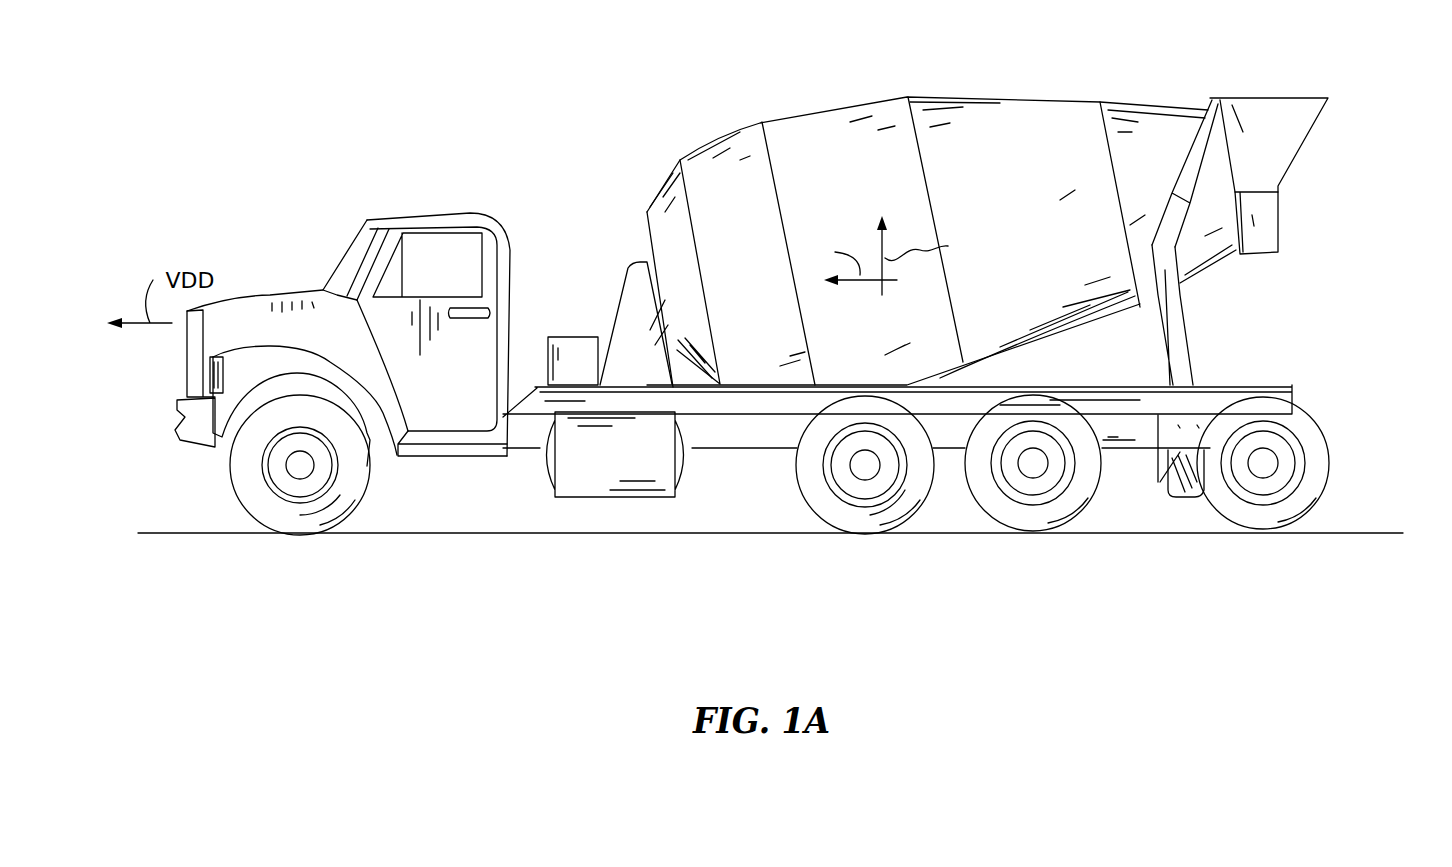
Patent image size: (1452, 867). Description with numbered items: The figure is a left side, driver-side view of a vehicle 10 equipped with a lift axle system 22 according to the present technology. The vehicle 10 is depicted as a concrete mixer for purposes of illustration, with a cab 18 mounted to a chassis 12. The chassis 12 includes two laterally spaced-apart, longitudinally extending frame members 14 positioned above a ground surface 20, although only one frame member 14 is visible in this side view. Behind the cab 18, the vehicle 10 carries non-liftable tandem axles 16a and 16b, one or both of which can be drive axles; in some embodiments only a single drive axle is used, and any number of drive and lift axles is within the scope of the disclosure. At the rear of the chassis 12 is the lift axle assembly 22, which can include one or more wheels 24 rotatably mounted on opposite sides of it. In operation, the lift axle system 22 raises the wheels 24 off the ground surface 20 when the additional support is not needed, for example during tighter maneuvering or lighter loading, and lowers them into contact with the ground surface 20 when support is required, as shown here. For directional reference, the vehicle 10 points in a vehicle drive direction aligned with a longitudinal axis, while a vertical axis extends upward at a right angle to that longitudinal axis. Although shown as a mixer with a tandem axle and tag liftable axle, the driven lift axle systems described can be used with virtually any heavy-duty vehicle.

The vehicle 10 is at (710, 58).
The chassis 12 is at (757, 468).
The frame member 14 is at (1132, 449).
The tandem axle 16a is at (855, 468).
The tandem axle 16b is at (1030, 465).
The cab 18 is at (405, 212).
The ground surface 20 is at (1350, 533).
The lift axle system 22 is at (1158, 500).
The wheel 24 is at (1333, 452).